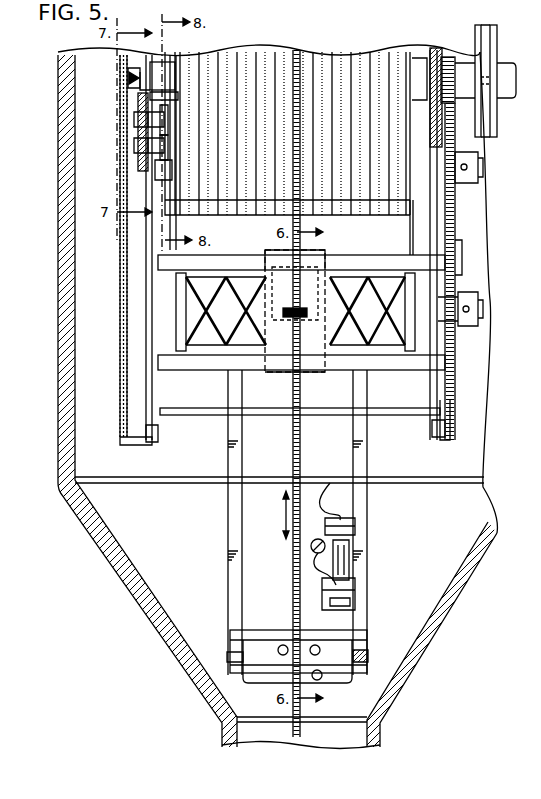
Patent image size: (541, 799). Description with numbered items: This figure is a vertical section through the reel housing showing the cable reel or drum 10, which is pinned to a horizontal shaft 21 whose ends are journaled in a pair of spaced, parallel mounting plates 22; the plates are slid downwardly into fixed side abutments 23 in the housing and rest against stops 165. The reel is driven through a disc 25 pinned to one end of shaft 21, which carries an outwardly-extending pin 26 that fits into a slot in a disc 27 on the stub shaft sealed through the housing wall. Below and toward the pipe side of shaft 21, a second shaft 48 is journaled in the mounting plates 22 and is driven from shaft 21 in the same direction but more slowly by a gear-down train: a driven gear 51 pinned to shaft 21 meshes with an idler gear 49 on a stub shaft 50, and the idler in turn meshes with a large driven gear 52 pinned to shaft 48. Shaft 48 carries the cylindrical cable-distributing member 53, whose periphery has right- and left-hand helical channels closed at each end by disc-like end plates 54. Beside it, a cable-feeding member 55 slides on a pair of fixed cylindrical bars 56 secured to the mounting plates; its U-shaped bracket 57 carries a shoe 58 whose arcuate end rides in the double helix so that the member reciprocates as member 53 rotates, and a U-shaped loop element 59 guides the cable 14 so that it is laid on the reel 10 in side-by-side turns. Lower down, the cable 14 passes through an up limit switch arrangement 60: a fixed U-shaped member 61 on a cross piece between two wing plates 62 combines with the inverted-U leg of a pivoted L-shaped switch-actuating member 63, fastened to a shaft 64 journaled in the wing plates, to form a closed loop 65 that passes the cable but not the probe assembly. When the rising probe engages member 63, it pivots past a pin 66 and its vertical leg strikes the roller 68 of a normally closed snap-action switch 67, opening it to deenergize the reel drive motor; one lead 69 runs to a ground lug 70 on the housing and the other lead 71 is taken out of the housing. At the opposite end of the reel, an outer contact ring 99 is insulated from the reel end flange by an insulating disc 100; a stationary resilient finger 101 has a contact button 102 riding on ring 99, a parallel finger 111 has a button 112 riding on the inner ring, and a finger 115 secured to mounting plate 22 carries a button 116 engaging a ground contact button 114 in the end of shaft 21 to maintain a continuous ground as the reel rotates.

The reel 10 is at (405, 60).
The cable 14 is at (333, 62).
The shaft 21 is at (152, 73).
The mounting plates 22 is at (130, 378).
The side abutments 23 is at (146, 442).
The disc 25 is at (478, 28).
The pin 26 is at (505, 85).
The disc 27 is at (497, 35).
The shaft 48 is at (475, 324).
The idler gear 49 is at (457, 200).
The stub shaft 50 is at (483, 167).
The driven gear 51 is at (450, 57).
The large driven gear 52 is at (458, 255).
The cable-distributing member 53 is at (374, 320).
The end plates 54 is at (183, 350).
The cable-feeding member 55 is at (318, 258).
The cylindrical bars 56 is at (232, 262).
The U-shaped bracket 57 is at (290, 378).
The shoe 58 is at (340, 266).
The U-shaped loop element 59 is at (288, 318).
The up limit switch arrangement 60 is at (352, 660).
The U-shaped member 61 is at (283, 645).
The wing plates 62 is at (230, 457).
The switch-actuating member 63 is at (273, 686).
The shaft 64 is at (230, 658).
The closed loop 65 is at (321, 680).
The pin 66 is at (355, 596).
The limit switch 67 is at (350, 527).
The roller 68 is at (350, 575).
The lead 69 is at (318, 568).
The ground lug 70 is at (318, 539).
The lead 71 is at (330, 483).
The outer contact ring 99 is at (165, 96).
The insulating disc 100 is at (170, 170).
The resilient finger 101 is at (140, 152).
The contact button 102 is at (168, 146).
The resilient finger 111 is at (136, 121).
The contact button 112 is at (168, 125).
The ground contact button 114 is at (142, 88).
The resilient finger 115 is at (129, 80).
The contact button 116 is at (132, 70).
The stops 165 is at (154, 444).